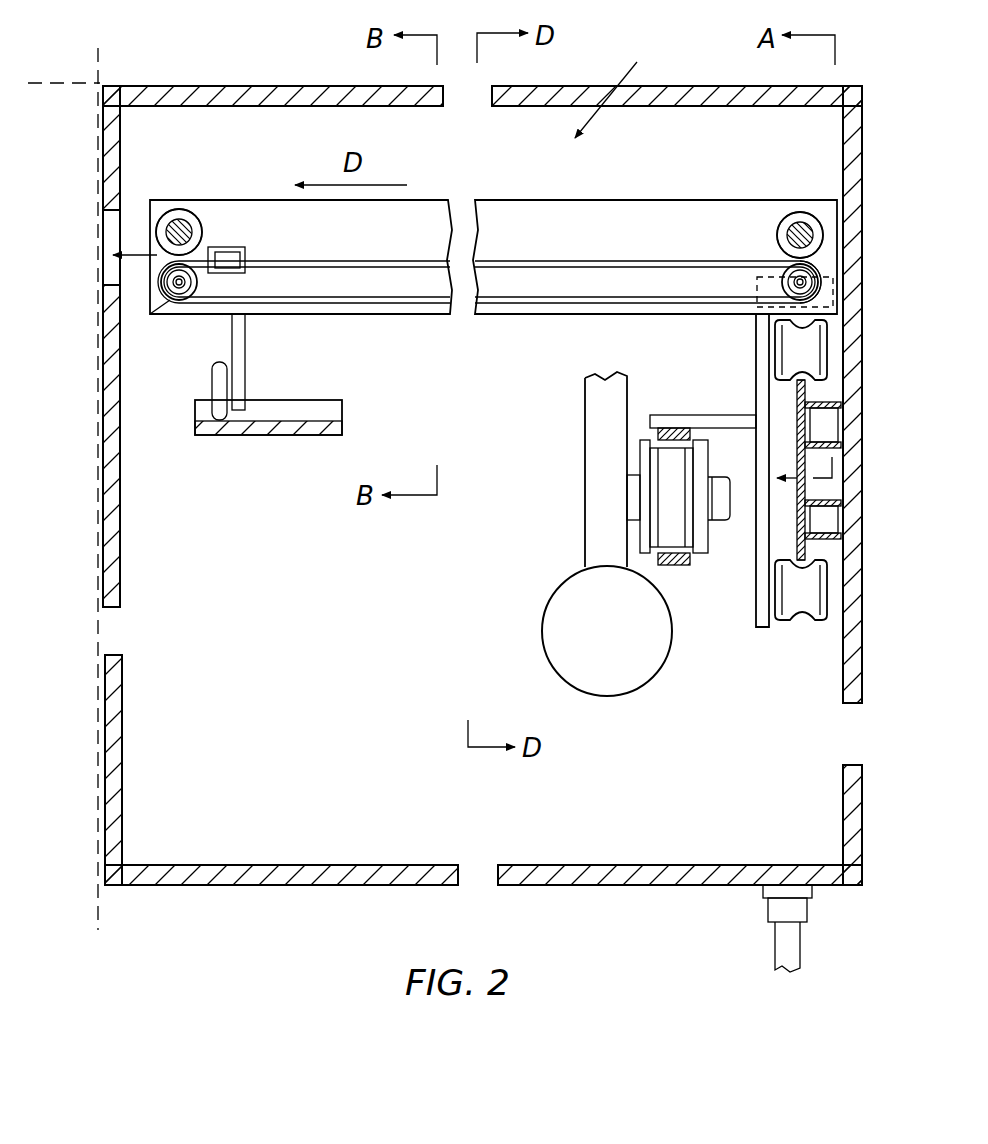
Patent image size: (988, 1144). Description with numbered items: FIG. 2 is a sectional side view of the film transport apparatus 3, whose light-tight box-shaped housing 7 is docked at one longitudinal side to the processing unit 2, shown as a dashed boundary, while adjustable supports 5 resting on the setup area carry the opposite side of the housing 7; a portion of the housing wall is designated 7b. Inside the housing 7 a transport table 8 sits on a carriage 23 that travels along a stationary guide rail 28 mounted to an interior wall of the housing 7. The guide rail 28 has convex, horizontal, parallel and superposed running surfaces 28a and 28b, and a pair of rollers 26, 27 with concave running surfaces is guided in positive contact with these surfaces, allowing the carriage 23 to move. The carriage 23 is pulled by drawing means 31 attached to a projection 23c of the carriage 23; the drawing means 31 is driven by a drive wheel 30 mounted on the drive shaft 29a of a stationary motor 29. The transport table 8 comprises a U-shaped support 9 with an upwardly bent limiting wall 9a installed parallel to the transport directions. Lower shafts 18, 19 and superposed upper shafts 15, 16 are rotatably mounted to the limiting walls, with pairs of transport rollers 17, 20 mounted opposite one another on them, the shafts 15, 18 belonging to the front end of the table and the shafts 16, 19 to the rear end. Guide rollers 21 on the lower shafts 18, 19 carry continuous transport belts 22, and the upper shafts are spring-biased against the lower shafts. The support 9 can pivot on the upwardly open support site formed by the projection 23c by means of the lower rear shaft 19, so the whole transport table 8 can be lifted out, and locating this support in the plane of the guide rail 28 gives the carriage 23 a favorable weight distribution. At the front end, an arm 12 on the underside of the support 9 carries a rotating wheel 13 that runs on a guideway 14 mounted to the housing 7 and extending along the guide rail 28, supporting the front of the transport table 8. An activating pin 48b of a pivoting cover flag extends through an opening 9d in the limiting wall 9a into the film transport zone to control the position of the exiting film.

The processing unit 2 is at (64, 474).
The film transport apparatus 3 is at (278, 70).
The adjustable supports 5 is at (775, 948).
The housing 7 is at (592, 86).
The wall opening 7b is at (112, 232).
The transport table 8 is at (611, 83).
The U-shaped support 9 is at (400, 314).
The limiting wall 9a is at (622, 200).
The opening 9d is at (230, 253).
The arm 12 is at (246, 352).
The rotating wheel 13 is at (226, 383).
The guideway 14 is at (280, 436).
The upper shaft 15 is at (200, 222).
The upper shaft 16 is at (790, 232).
The transport rollers 17 is at (178, 210).
The lower shaft 18 is at (168, 308).
The lower rear shaft 19 is at (820, 272).
The transport rollers 20 is at (160, 282).
The guide rollers 21 is at (188, 300).
The continuous transport belts 22 is at (518, 315).
The carriage 23 is at (845, 297).
The projection 23c is at (672, 415).
The roller 26 is at (812, 350).
The roller 27 is at (800, 620).
The guide rail 28 is at (840, 495).
The running surface 28a is at (800, 377).
The running surface 28b is at (820, 580).
The stationary motor 29 is at (550, 630).
The drive shaft 29a is at (722, 522).
The drive wheel 30 is at (662, 525).
The drawing means 31 is at (675, 568).
The activating pin 48b is at (246, 258).